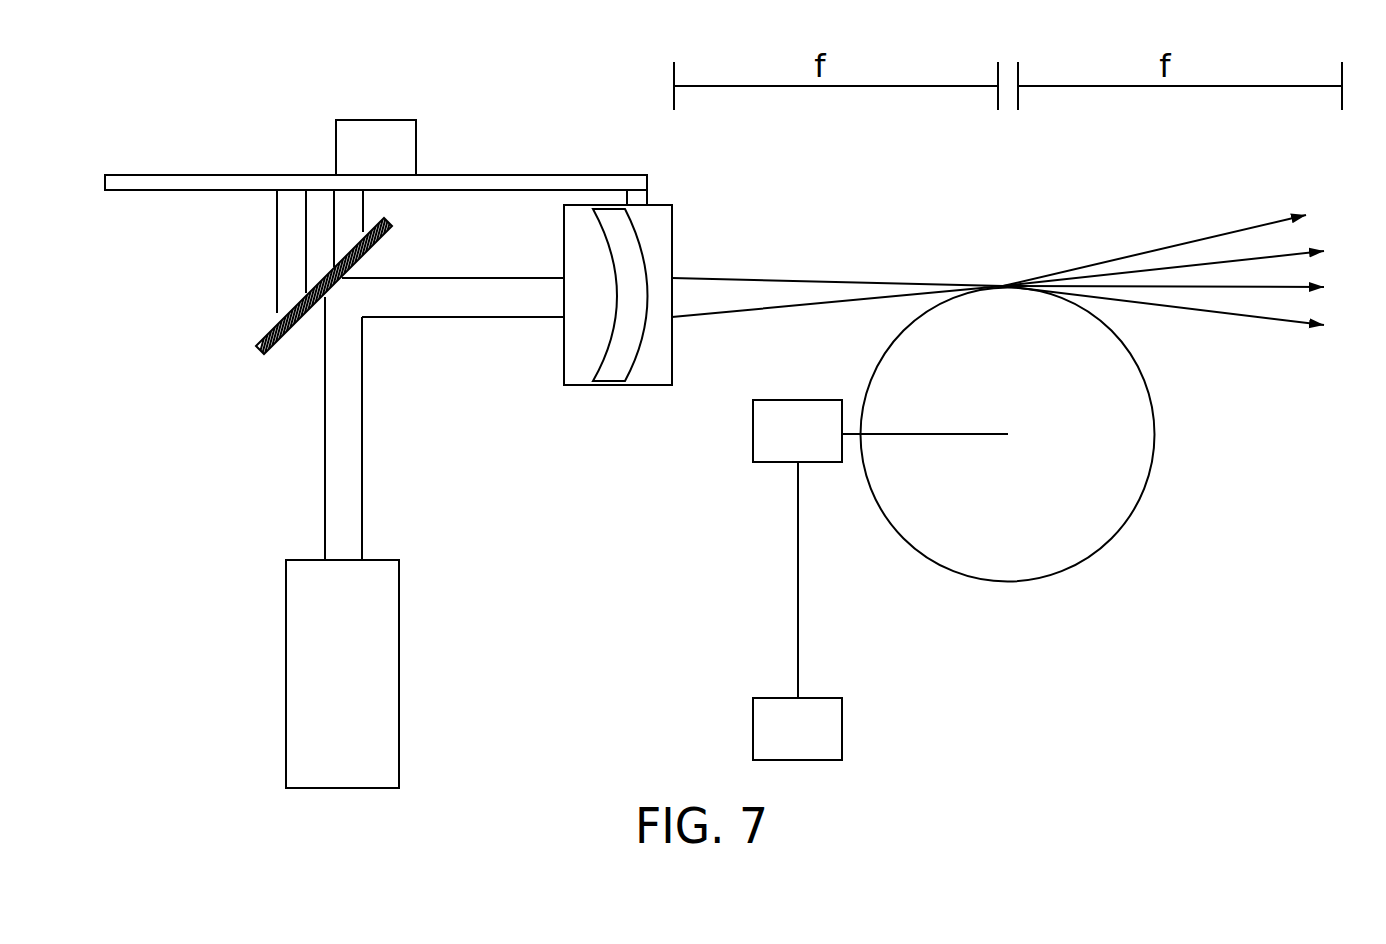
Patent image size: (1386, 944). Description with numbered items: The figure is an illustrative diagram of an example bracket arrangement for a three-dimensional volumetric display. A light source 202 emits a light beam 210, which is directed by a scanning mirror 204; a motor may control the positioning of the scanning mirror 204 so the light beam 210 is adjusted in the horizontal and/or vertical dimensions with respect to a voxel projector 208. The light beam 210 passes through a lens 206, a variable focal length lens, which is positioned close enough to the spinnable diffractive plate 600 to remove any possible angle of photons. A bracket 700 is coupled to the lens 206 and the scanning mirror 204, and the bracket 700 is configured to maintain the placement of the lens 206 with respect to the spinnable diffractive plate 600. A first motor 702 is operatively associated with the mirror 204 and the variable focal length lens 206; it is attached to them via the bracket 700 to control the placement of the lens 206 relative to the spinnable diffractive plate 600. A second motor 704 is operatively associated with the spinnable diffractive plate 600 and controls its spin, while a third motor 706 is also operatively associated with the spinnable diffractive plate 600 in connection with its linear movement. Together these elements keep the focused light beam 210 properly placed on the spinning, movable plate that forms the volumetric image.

The bracket 700 is at (527, 175).
The first motor 702 is at (337, 142).
The scanning mirror 204 is at (258, 348).
The lens 206 is at (564, 240).
The light beam 210 is at (360, 428).
The light source 202 is at (400, 663).
The voxel projector 208 is at (764, 228).
The spinnable diffractive plate 600 is at (1150, 467).
The second motor 704 is at (753, 428).
The third motor 706 is at (753, 728).